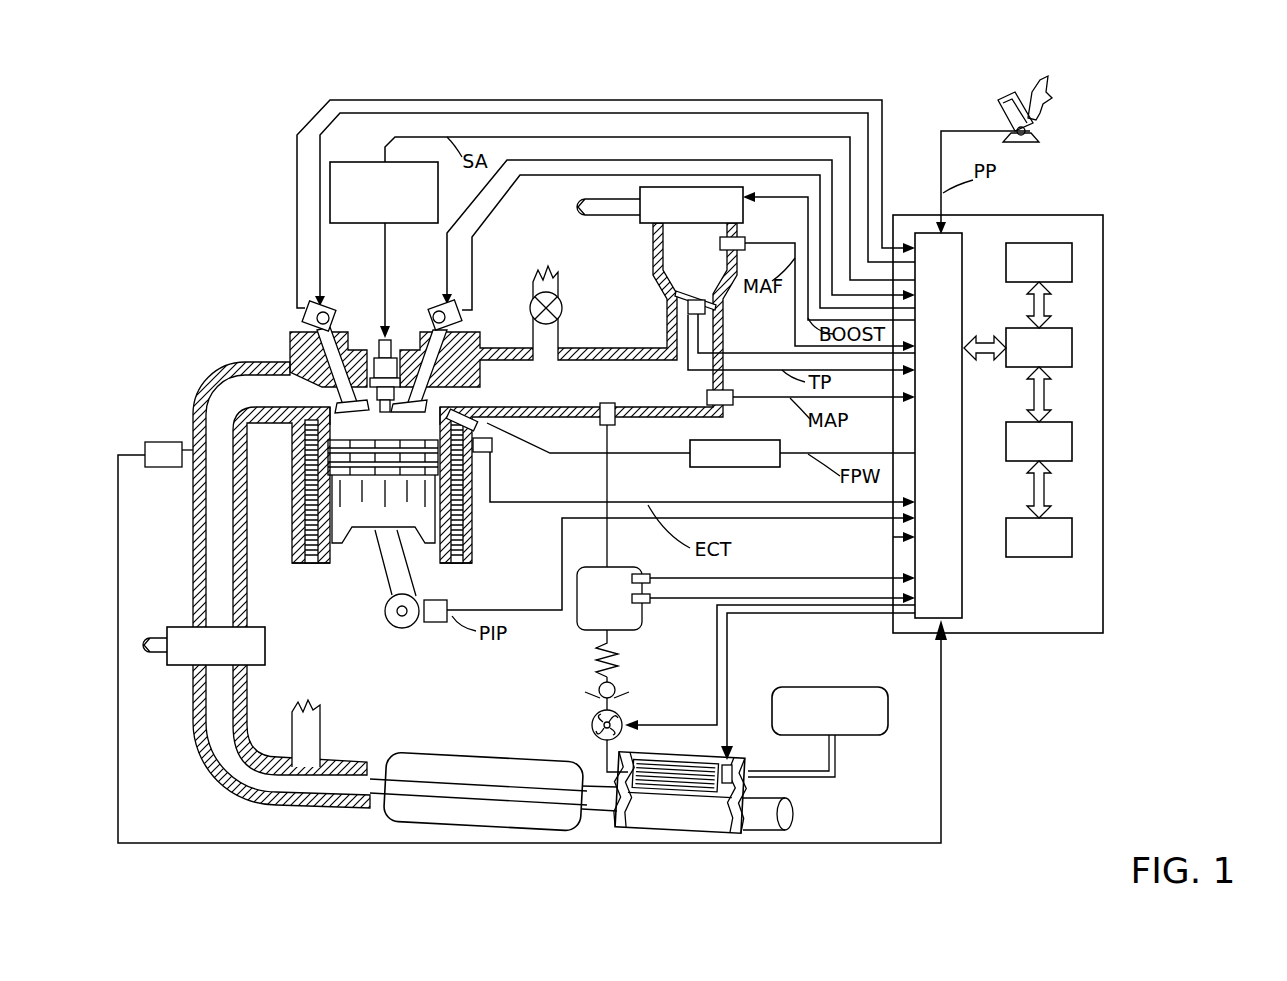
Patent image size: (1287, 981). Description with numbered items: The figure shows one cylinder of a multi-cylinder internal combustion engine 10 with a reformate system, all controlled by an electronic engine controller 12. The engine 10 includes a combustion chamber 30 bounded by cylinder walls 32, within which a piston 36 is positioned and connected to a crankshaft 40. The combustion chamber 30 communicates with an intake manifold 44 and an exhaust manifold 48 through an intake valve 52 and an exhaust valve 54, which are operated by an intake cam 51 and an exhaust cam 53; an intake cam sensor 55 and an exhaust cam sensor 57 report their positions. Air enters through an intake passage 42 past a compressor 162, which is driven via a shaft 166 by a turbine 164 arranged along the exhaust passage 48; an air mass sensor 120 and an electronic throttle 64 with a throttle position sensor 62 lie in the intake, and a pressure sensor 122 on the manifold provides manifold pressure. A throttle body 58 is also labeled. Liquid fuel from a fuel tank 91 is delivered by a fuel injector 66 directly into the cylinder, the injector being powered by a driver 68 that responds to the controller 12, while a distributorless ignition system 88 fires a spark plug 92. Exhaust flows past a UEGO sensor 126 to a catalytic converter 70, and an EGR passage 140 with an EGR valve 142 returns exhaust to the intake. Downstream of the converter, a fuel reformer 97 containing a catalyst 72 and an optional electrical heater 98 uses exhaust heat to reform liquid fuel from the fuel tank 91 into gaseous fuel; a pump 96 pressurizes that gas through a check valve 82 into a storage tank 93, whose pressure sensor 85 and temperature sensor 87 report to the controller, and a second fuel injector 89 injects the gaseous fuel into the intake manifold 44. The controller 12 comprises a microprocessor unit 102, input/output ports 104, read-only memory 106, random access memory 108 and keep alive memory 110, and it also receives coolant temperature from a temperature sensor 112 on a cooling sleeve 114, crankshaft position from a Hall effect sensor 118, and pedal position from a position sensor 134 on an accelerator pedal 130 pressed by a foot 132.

The internal combustion engine 10 is at (232, 288).
The electronic engine controller 12 is at (1095, 216).
The combustion chamber 30 is at (310, 518).
The cylinder walls 32 is at (328, 556).
The piston 36 is at (367, 516).
The crankshaft 40 is at (388, 628).
The intake passage 42 is at (678, 266).
The intake manifold 44 is at (620, 397).
The exhaust manifold 48 is at (250, 402).
The intake cam 51 is at (443, 300).
The intake valve 52 is at (425, 392).
The exhaust cam 53 is at (325, 302).
The exhaust valve 54 is at (305, 372).
The intake cam sensor 55 is at (458, 324).
The exhaust cam sensor 57 is at (308, 320).
The throttle body 58 is at (670, 318).
The throttle position sensor 62 is at (718, 300).
The electronic throttle 64 is at (667, 299).
The fuel injector 66 is at (487, 424).
The driver 68 is at (705, 467).
The catalytic converter 70 is at (397, 756).
The catalyst 72 is at (668, 758).
The check valve 82 is at (618, 690).
The pressure sensor 85 is at (643, 572).
The temperature sensor 87 is at (650, 603).
The distributorless ignition system 88 is at (343, 162).
The fuel injector 89 is at (602, 426).
The fuel tank 91 is at (835, 687).
The spark plug 92 is at (388, 338).
The storage tank 93 is at (578, 628).
The pump 96 is at (592, 728).
The fuel reformer 97 is at (750, 763).
The electrical heater 98 is at (735, 757).
The microprocessor unit 102 is at (1072, 347).
The input/output ports 104 is at (962, 243).
The read-only memory 106 is at (1072, 260).
The random access memory 108 is at (1072, 440).
The keep alive memory 110 is at (1072, 537).
The temperature sensor 112 is at (491, 453).
The cooling sleeve 114 is at (473, 520).
The Hall effect sensor 118 is at (437, 623).
The air mass sensor 120 is at (745, 240).
The pressure sensor 122 is at (728, 405).
The UEGO sensor 126 is at (143, 445).
The accelerator pedal 130 is at (1000, 110).
The foot 132 is at (1047, 96).
The position sensor 134 is at (1035, 134).
The EGR passage 140 is at (535, 283).
The EGR valve 142 is at (556, 314).
The compressor 162 is at (674, 218).
The turbine 164 is at (200, 658).
The shaft 166 is at (606, 215).